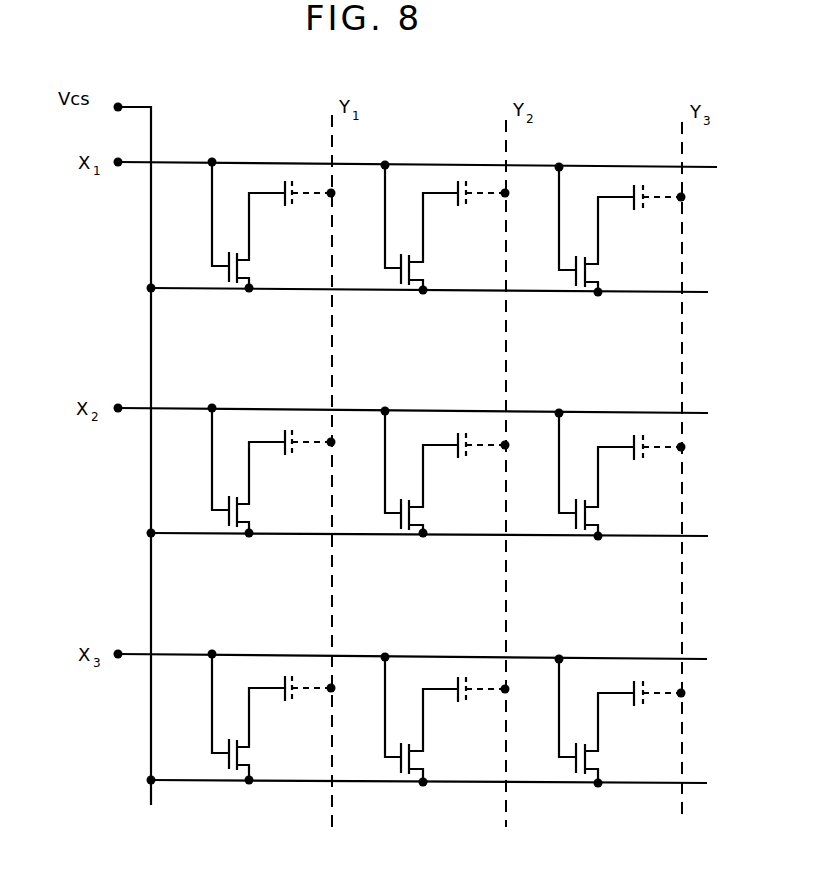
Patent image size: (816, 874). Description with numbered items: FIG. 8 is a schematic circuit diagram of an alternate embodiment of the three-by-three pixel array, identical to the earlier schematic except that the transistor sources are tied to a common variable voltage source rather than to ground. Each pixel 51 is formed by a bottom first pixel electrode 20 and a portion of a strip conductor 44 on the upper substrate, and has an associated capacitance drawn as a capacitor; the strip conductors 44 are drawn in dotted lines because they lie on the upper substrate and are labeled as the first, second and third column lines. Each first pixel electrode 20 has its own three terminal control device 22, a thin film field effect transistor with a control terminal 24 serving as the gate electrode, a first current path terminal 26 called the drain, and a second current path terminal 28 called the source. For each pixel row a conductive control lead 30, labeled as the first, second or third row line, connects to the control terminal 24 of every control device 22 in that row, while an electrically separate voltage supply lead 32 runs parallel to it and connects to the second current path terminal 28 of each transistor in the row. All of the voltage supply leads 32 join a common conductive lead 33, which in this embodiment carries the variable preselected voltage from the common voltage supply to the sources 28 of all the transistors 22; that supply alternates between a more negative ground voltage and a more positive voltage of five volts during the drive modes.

The first pixel electrode 20 is at (466, 452).
The three terminal control device 22 is at (409, 473).
The control terminal 24 is at (375, 468).
The first current path terminal 26 is at (426, 472).
The second current path terminal 28 is at (445, 526).
The conductive control lead 30 is at (166, 161).
The voltage supply lead 32 is at (180, 289).
The common conductive lead 33 is at (150, 239).
The strip conductor 44 is at (330, 144).
The pixel 51 is at (486, 459).